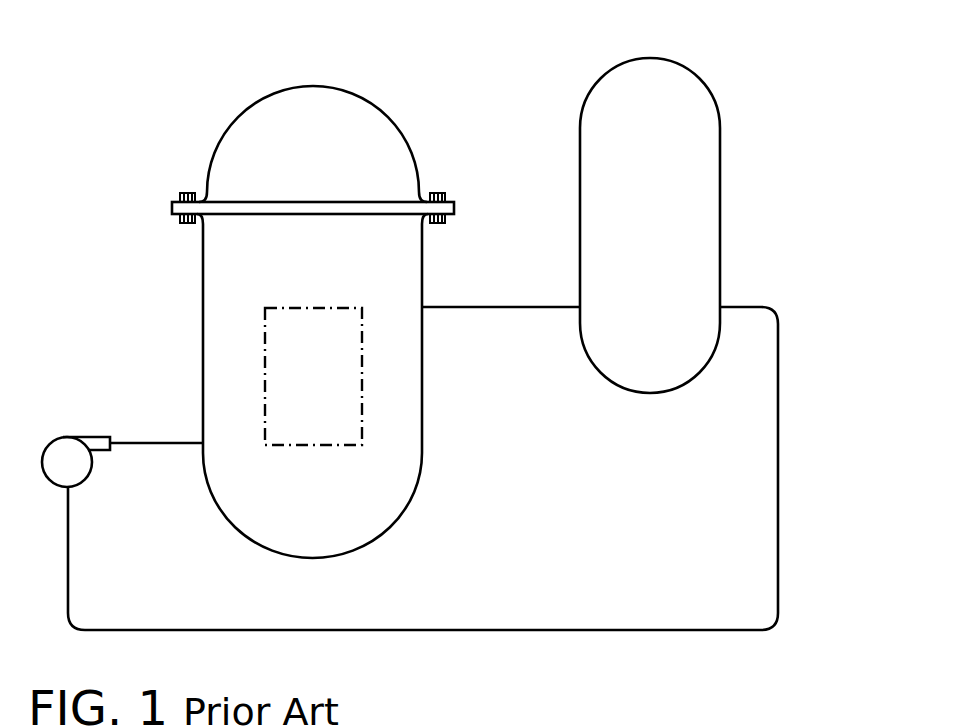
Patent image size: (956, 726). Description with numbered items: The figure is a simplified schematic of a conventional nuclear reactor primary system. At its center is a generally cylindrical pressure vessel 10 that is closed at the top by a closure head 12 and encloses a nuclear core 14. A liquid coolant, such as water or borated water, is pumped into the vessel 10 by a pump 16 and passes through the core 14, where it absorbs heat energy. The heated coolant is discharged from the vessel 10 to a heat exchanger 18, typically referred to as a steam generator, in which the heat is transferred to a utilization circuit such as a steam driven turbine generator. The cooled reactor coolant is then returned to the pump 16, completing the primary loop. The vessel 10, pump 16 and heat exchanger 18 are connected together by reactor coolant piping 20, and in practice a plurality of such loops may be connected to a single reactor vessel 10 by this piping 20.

The pressure vessel 10 is at (327, 389).
The closure head 12 is at (215, 152).
The nuclear core 14 is at (263, 362).
The pump 16 is at (62, 437).
The heat exchanger 18 is at (722, 164).
The reactor coolant piping 20 is at (780, 560).